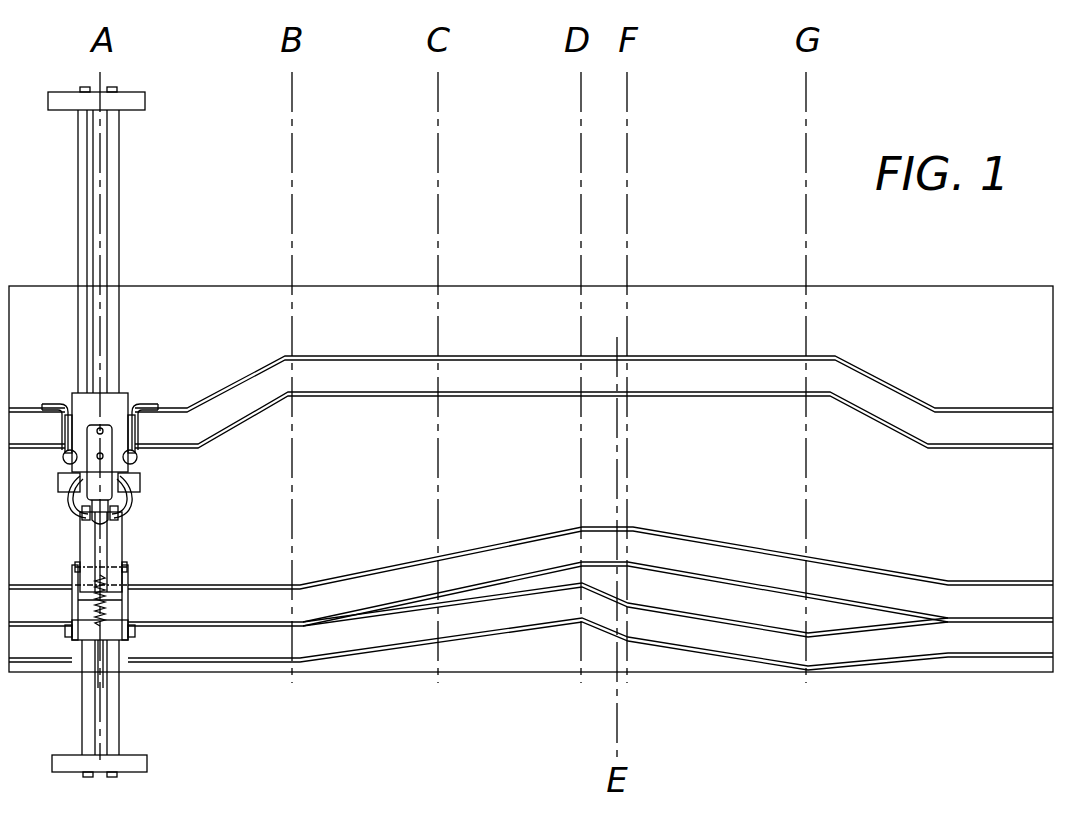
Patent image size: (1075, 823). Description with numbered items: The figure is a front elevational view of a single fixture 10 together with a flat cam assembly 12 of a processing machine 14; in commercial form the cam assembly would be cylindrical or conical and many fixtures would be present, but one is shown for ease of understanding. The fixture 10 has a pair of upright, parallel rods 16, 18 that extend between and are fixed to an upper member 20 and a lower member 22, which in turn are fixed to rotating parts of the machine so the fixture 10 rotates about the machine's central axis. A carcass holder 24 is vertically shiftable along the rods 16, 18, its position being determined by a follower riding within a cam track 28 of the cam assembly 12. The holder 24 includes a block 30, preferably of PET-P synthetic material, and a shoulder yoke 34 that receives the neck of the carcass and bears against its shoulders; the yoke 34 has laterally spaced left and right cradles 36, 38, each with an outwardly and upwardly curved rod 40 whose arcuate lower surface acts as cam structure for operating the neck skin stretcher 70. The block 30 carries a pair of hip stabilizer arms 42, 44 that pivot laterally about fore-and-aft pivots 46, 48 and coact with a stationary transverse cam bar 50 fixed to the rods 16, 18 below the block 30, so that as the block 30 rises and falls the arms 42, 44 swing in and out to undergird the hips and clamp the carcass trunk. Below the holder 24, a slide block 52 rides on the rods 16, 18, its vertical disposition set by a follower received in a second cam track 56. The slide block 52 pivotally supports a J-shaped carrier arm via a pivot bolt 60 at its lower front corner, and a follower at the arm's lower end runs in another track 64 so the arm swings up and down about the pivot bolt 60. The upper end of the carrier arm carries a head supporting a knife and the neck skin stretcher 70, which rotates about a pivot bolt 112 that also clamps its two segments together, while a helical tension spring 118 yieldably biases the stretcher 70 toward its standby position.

The fixture 10 is at (130, 233).
The flat cam assembly 12 is at (463, 284).
The processing machine 14 is at (276, 705).
The upright rod 16 is at (78, 138).
The upright rod 18 is at (117, 158).
The upper member 20 is at (128, 97).
The lower member 22 is at (130, 768).
The carcass holder 24 is at (127, 393).
The cam track 28 is at (340, 370).
The block 30 is at (76, 396).
The shoulder yoke 34 is at (135, 507).
The left cradle 36 is at (70, 495).
The right cradle 38 is at (138, 490).
The curved rod 40 is at (82, 510).
The hip stabilizer arm 42 is at (62, 428).
The hip stabilizer arm 44 is at (140, 438).
The fore-and-aft pivot 46 is at (64, 461).
The fore-and-aft pivot 48 is at (136, 459).
The cam bar 50 is at (140, 482).
The slide block 52 is at (128, 610).
The cam track 56 is at (372, 580).
The pivot bolt 60 is at (138, 632).
The track 64 is at (375, 635).
The neck skin stretcher 70 is at (126, 548).
The pivot bolt 112 is at (75, 566).
The helical tension spring 118 is at (95, 610).